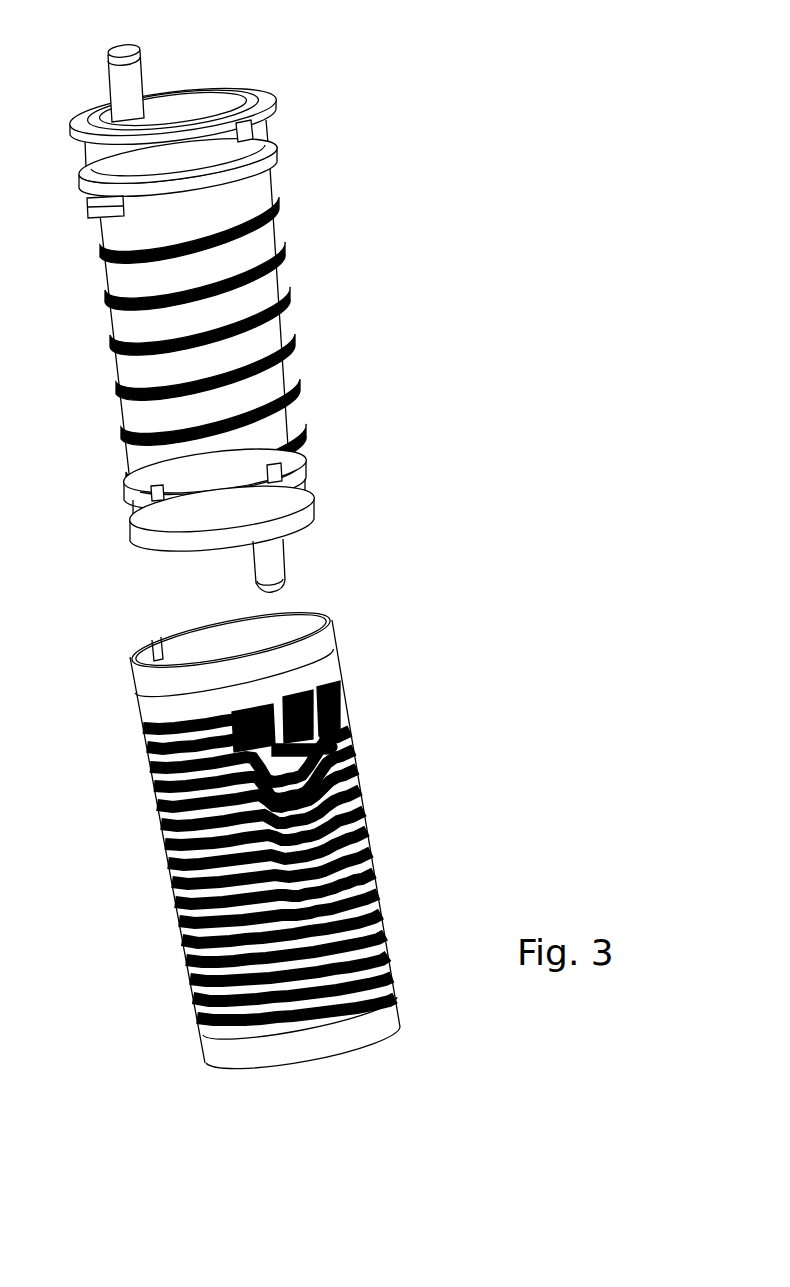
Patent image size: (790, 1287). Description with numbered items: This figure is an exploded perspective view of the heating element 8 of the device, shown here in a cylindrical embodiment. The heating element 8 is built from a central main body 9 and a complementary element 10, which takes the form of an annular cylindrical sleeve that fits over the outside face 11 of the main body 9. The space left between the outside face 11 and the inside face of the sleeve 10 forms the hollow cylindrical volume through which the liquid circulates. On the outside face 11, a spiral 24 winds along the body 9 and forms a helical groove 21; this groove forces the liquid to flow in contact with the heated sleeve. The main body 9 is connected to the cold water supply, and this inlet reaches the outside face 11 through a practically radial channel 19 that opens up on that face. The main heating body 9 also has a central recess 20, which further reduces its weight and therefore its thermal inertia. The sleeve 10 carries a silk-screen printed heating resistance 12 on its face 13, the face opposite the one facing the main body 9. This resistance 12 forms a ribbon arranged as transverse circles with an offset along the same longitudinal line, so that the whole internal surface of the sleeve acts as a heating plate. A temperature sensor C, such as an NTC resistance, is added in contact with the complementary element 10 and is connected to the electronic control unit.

The heating element 8 is at (380, 534).
The main body 9 is at (303, 296).
The complementary element 10 is at (330, 789).
The outside face 11 is at (260, 300).
The silk-screen printed heating resistance 12 is at (355, 810).
The face 13 is at (313, 670).
The radial channel 19 is at (306, 467).
The central recess 20 is at (195, 106).
The helical groove 21 is at (292, 364).
The spiral 24 is at (268, 212).
The temperature sensor C is at (330, 746).